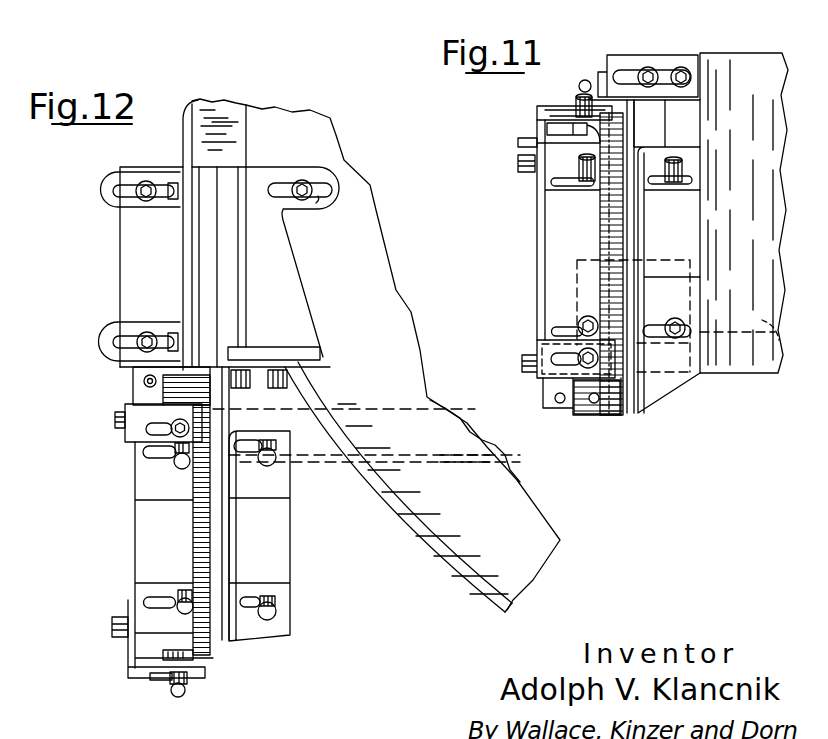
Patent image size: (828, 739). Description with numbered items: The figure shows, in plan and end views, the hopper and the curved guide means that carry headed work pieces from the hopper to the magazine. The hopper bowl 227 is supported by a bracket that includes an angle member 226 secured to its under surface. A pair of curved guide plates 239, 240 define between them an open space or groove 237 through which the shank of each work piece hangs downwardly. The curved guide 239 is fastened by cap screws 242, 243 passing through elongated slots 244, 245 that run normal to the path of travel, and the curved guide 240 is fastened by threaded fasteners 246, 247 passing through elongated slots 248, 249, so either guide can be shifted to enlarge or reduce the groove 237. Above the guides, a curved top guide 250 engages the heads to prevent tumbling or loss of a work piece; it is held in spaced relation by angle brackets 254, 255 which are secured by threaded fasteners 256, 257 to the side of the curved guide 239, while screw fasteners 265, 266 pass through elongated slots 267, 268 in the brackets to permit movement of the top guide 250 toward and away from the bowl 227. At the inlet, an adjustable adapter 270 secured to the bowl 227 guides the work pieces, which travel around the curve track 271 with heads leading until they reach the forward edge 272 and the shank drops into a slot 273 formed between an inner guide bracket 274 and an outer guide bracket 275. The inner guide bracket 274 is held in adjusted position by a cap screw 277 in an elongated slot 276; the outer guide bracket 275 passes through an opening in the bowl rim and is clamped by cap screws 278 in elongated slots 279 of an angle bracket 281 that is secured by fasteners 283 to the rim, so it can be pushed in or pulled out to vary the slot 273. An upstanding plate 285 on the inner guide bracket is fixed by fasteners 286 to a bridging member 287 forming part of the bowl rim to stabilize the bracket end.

In FIG. 12, the angle member 226 is at (322, 452).
In FIG. 11, the angle member 226 is at (625, 361).
In FIG. 12, the hopper bowl 227 is at (196, 112).
In FIG. 11, the hopper bowl 227 is at (765, 94).
In FIG. 12, the groove 237 is at (222, 658).
In FIG. 11, the groove 237 is at (629, 418).
In FIG. 12, the curved guide plate 239 is at (145, 542).
In FIG. 12, the curved guide plate 240 is at (270, 540).
In FIG. 11, the curved guide plate 240 is at (680, 245).
In FIG. 12, the cap screw 242 is at (180, 468).
In FIG. 11, the cap screw 242 is at (578, 170).
In FIG. 12, the cap screw 243 is at (184, 590).
In FIG. 11, the cap screw 243 is at (582, 320).
In FIG. 12, the elongated slot 244 is at (152, 458).
In FIG. 11, the elongated slot 244 is at (565, 190).
In FIG. 12, the elongated slot 245 is at (150, 600).
In FIG. 11, the elongated slot 245 is at (558, 330).
In FIG. 12, the threaded fastener 246 is at (272, 464).
In FIG. 11, the threaded fastener 246 is at (685, 168).
In FIG. 12, the threaded fastener 247 is at (278, 612).
In FIG. 11, the threaded fastener 247 is at (684, 320).
In FIG. 12, the elongated slot 248 is at (243, 452).
In FIG. 11, the elongated slot 248 is at (662, 185).
In FIG. 12, the elongated slot 249 is at (258, 602).
In FIG. 11, the elongated slot 249 is at (660, 337).
In FIG. 12, the top guide 250 is at (198, 525).
In FIG. 11, the top guide 250 is at (618, 417).
In FIG. 12, the angle bracket 254 is at (150, 440).
In FIG. 11, the angle bracket 254 is at (538, 110).
In FIG. 12, the angle bracket 255 is at (128, 670).
In FIG. 11, the angle bracket 255 is at (537, 345).
In FIG. 12, the threaded fastener 256 is at (117, 424).
In FIG. 12, the threaded fastener 257 is at (112, 630).
In FIG. 12, the screw fastener 265 is at (172, 427).
In FIG. 11, the screw fastener 265 is at (572, 108).
In FIG. 12, the screw fastener 266 is at (185, 692).
In FIG. 11, the screw fastener 266 is at (580, 362).
In FIG. 12, the elongated slot 267 is at (152, 431).
In FIG. 12, the elongated slot 268 is at (158, 680).
In FIG. 12, the adjustable adapter 270 is at (300, 272).
In FIG. 12, the curve track 271 is at (228, 125).
In FIG. 12, the forward edge 272 is at (260, 165).
In FIG. 12, the slot 273 is at (210, 262).
In FIG. 12, the inner guide bracket 274 is at (278, 310).
In FIG. 12, the outer guide bracket 275 is at (214, 275).
In FIG. 12, the elongated slot 276 is at (319, 197).
In FIG. 12, the cap screw 277 is at (308, 186).
In FIG. 12, the cap screw 278 is at (122, 194).
In FIG. 12, the elongated slot 279 is at (130, 198).
In FIG. 12, the angle bracket 281 is at (133, 176).
In FIG. 12, the fastener 283 is at (162, 204).
In FIG. 12, the upstanding plate 285 is at (300, 348).
In FIG. 12, the fastener 286 is at (278, 388).
In FIG. 11, the fastener 286 is at (677, 68).
In FIG. 12, the bridging member 287 is at (328, 364).